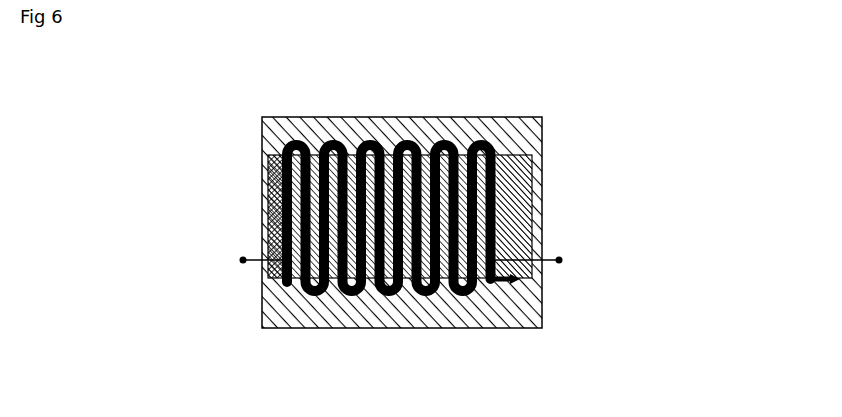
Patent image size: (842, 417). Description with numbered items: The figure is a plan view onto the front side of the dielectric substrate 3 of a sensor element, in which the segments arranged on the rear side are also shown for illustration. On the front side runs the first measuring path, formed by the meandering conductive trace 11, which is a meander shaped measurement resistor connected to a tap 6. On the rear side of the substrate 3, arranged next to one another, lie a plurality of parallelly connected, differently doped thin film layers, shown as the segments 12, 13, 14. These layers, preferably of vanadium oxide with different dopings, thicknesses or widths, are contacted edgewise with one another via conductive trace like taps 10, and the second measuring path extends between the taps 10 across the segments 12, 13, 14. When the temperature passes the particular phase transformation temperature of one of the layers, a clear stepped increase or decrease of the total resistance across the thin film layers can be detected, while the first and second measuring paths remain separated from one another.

The substrate 3 is at (262, 118).
The tap 6 is at (243, 260).
The conductive trace like tap 10 is at (512, 155).
The meandering conductive trace 11 is at (352, 288).
The layer 12 is at (532, 220).
The layer 13 is at (266, 208).
The layer 14 is at (536, 191).